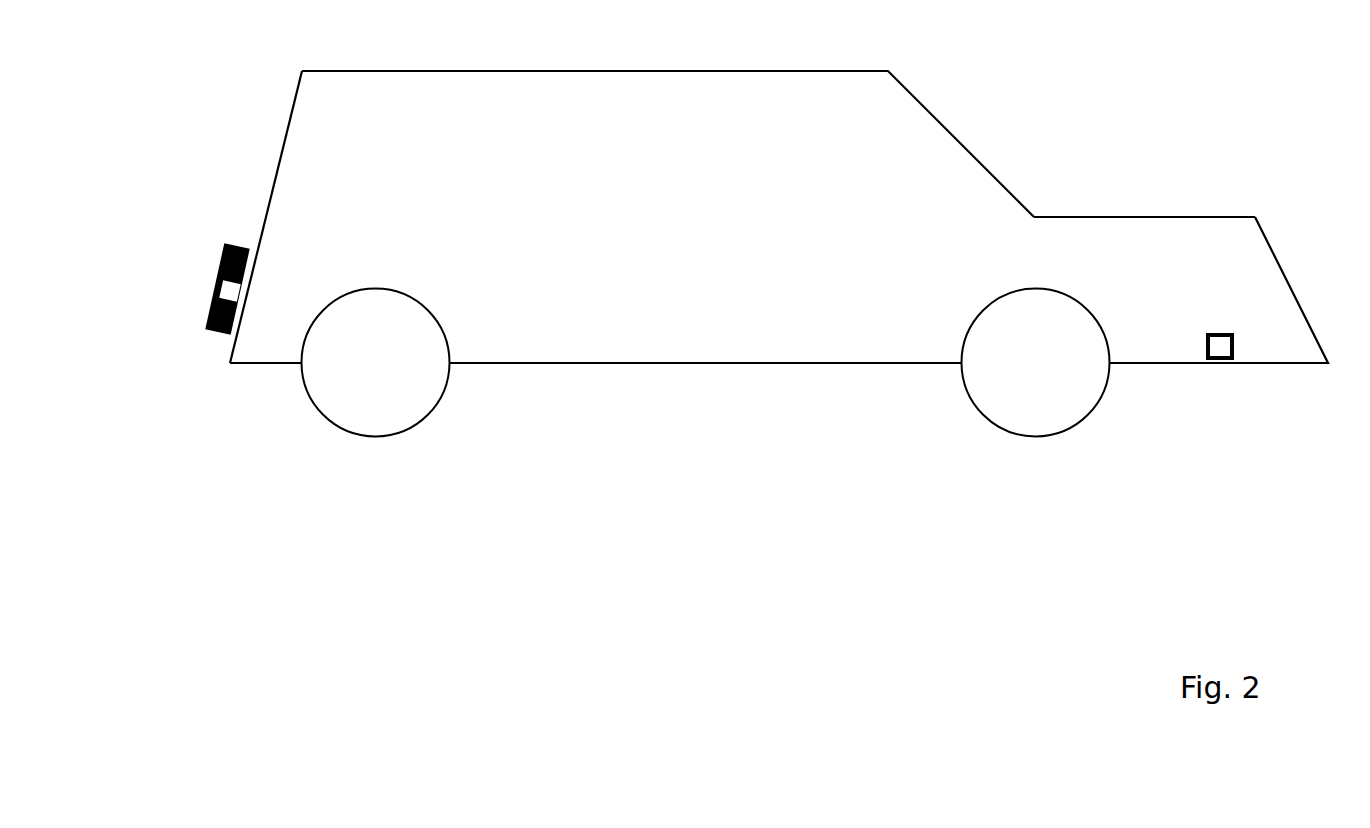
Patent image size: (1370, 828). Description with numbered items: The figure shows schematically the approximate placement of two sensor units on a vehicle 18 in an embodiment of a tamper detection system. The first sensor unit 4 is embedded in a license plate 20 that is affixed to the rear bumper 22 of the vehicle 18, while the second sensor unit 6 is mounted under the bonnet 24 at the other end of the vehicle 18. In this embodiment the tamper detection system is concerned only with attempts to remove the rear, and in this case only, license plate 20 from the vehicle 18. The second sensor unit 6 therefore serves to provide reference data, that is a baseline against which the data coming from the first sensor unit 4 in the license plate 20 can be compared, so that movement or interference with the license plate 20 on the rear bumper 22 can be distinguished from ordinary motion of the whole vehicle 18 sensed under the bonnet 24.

The first sensor unit 4 is at (245, 295).
The second sensor unit 6 is at (1234, 350).
The vehicle 18 is at (734, 232).
The license plate 20 is at (227, 253).
The rear bumper 22 is at (230, 353).
The bonnet 24 is at (1167, 217).